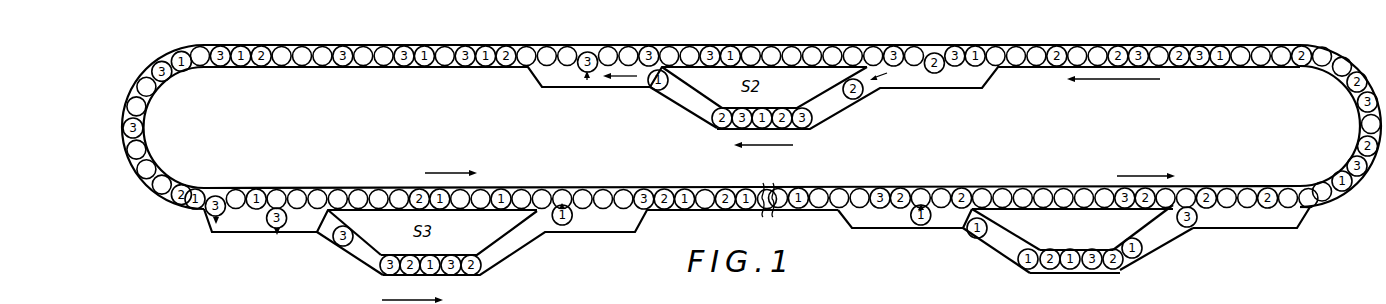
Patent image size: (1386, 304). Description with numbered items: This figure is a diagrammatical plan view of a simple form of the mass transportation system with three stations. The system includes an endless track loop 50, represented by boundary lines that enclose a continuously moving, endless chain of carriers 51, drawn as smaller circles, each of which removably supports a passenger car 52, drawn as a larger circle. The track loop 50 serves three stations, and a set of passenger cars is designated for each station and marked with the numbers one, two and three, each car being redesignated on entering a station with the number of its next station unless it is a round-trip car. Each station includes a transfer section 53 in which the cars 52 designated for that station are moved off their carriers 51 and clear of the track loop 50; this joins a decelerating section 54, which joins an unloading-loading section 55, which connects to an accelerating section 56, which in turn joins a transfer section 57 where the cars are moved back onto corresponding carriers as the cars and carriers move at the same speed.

The track loop 50 is at (284, 72).
The carriers 51 is at (366, 66).
The passenger car 52 is at (415, 67).
The transfer section 53 is at (890, 229).
The decelerating section 54 is at (995, 246).
The unloading-loading section 55 is at (1077, 274).
The accelerating section 56 is at (1150, 248).
The transfer section 57 is at (1282, 222).